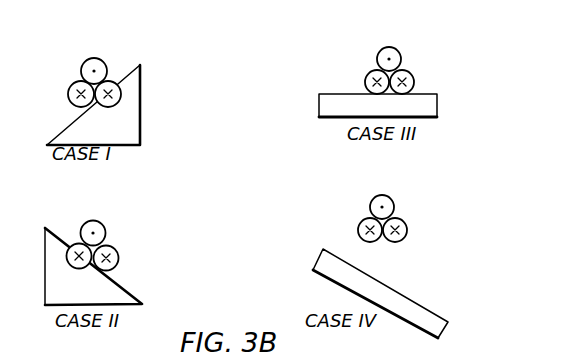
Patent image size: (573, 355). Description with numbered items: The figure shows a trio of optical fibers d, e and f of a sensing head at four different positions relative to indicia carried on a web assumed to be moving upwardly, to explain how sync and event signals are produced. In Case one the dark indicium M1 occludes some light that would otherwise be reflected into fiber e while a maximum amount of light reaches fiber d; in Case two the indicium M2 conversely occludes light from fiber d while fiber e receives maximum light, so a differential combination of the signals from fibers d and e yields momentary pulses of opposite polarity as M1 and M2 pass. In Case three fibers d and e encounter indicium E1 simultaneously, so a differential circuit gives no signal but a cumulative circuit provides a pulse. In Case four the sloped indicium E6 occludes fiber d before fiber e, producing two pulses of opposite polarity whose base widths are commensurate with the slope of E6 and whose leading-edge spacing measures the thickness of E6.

The optical fiber d is at (72, 86).
The optical fiber e is at (116, 82).
The optical fiber f is at (95, 58).
The indicium M1 is at (128, 117).
The indicium M2 is at (52, 284).
The indicium E1 is at (438, 103).
The indicium E6 is at (443, 325).